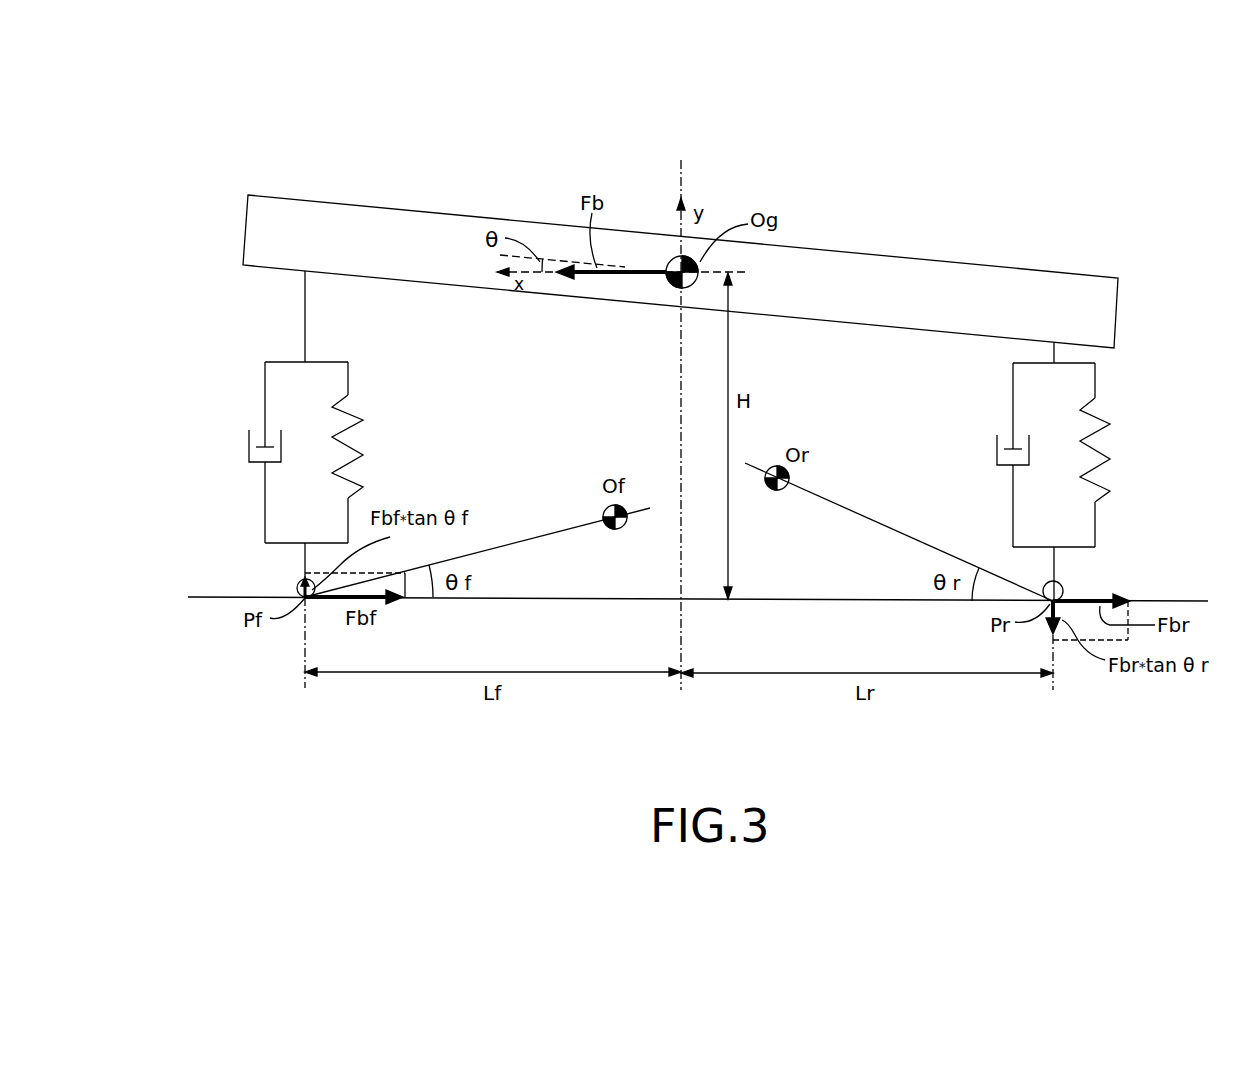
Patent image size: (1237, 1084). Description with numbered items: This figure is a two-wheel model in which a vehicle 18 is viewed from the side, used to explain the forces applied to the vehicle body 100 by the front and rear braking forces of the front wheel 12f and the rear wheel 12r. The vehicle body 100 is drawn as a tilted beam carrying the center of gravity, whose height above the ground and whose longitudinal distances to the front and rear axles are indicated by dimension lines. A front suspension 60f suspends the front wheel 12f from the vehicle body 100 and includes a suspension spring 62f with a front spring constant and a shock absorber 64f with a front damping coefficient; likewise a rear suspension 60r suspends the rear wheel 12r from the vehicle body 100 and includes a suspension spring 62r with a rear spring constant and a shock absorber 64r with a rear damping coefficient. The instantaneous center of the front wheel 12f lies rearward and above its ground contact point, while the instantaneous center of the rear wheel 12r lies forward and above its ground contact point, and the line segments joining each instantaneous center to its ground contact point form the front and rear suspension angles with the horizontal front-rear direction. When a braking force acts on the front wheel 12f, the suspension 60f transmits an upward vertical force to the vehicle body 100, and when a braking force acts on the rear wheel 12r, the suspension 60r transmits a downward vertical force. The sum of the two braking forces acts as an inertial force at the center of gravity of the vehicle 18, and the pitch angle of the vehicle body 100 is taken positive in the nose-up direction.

The vehicle 18 is at (1078, 244).
The vehicle body 100 is at (903, 257).
The suspension 60f is at (301, 434).
The suspension spring 62f is at (362, 418).
The shock absorber 64f is at (255, 419).
The front wheel 12f is at (297, 586).
The suspension 60r is at (1067, 471).
The suspension spring 62r is at (1097, 470).
The shock absorber 64r is at (995, 421).
The rear wheel 12r is at (1063, 590).